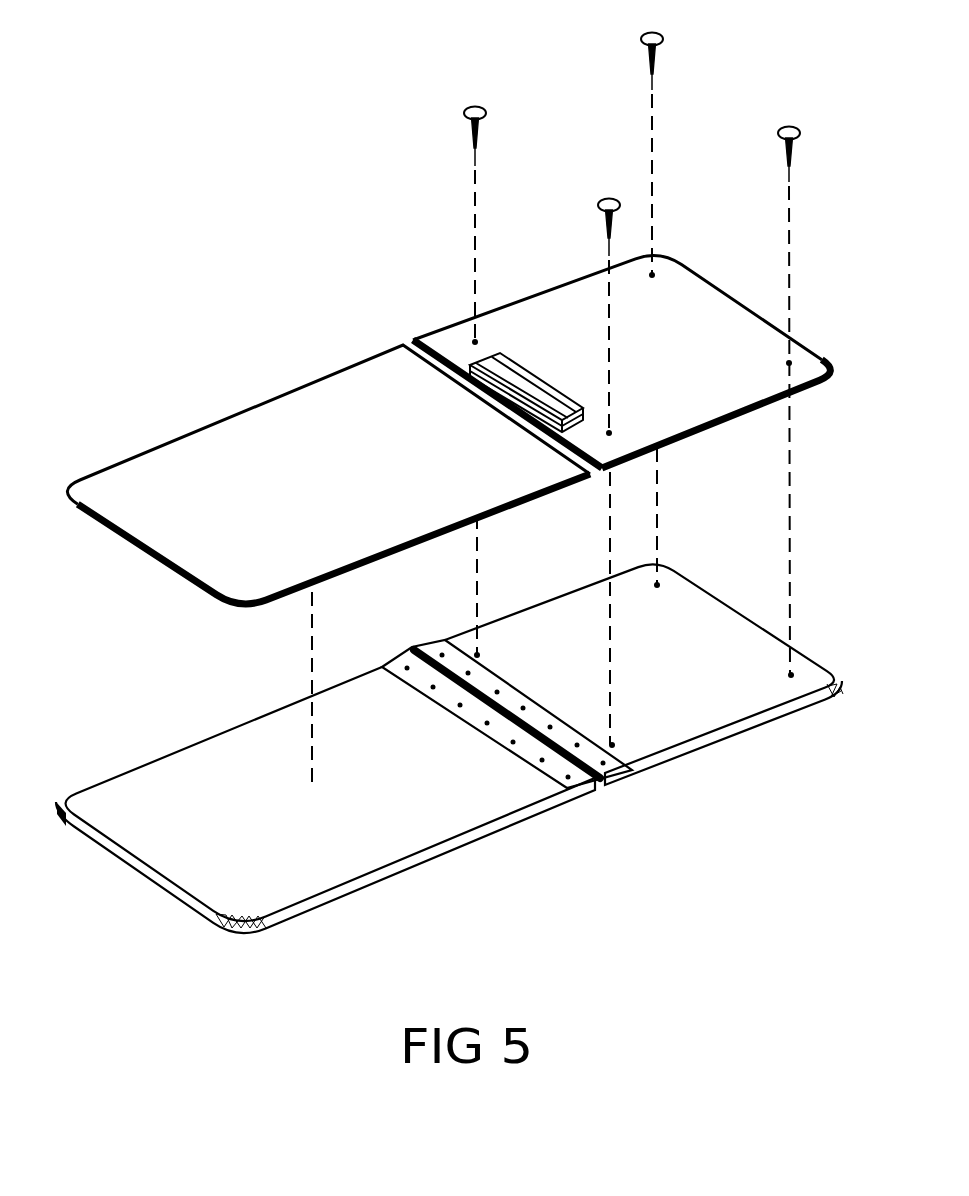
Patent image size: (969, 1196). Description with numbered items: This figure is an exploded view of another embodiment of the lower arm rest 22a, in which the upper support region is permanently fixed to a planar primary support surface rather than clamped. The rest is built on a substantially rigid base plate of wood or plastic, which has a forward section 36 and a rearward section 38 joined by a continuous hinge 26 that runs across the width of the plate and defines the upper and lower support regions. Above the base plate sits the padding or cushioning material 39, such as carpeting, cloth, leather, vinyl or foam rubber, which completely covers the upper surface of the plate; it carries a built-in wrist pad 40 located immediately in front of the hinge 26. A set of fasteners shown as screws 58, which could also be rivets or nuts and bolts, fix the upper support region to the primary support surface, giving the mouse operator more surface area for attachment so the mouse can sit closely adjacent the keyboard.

The arm rest 22a is at (147, 677).
The continuous hinge 26 is at (530, 747).
The forward section 36 is at (670, 730).
The rearward section 38 is at (320, 862).
The padding or cushioning material 39 is at (455, 338).
The wrist pad 40 is at (535, 387).
The screws 58 is at (603, 197).